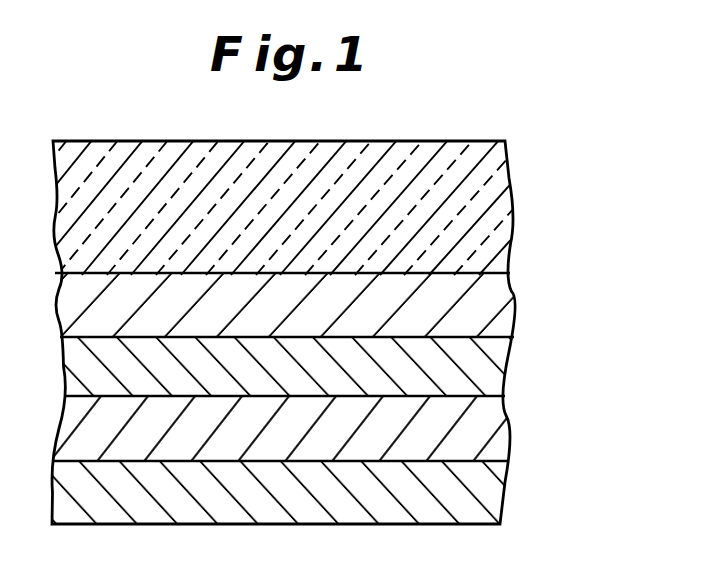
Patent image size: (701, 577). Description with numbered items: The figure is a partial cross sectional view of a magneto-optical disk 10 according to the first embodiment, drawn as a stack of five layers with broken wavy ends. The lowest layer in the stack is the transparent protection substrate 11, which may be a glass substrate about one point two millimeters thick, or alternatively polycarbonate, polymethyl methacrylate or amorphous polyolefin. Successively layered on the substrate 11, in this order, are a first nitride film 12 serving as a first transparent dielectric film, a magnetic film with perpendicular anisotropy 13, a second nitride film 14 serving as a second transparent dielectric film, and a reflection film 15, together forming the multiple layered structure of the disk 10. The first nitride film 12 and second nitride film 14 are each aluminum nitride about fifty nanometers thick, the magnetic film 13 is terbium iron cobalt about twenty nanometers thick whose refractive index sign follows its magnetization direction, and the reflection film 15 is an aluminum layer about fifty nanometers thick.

The magneto-optical disk 10 is at (283, 302).
The transparent protection substrate 11 is at (483, 203).
The first nitride film 12 is at (512, 295).
The magnetic film with perpendicular anisotropy 13 is at (490, 368).
The second nitride film 14 is at (506, 437).
The reflection film 15 is at (497, 497).